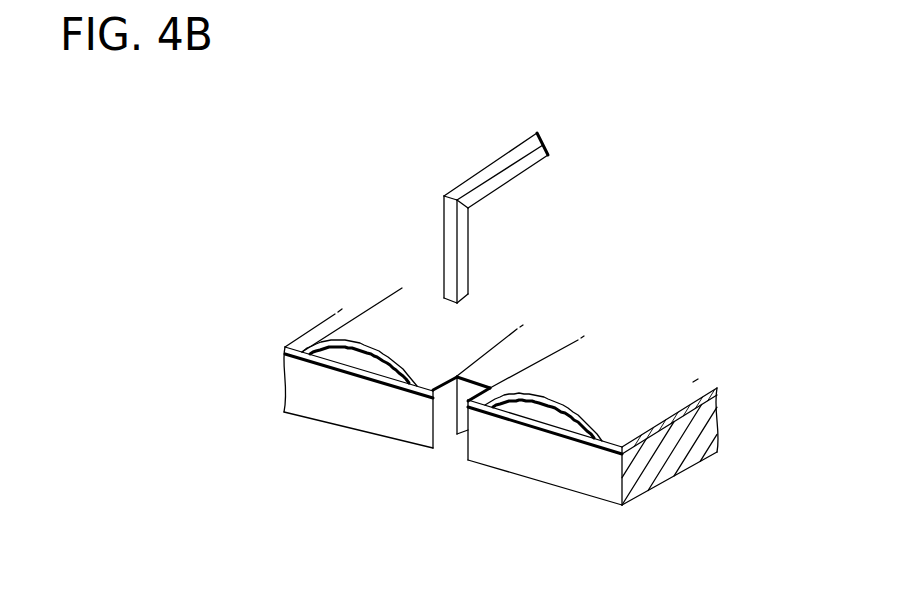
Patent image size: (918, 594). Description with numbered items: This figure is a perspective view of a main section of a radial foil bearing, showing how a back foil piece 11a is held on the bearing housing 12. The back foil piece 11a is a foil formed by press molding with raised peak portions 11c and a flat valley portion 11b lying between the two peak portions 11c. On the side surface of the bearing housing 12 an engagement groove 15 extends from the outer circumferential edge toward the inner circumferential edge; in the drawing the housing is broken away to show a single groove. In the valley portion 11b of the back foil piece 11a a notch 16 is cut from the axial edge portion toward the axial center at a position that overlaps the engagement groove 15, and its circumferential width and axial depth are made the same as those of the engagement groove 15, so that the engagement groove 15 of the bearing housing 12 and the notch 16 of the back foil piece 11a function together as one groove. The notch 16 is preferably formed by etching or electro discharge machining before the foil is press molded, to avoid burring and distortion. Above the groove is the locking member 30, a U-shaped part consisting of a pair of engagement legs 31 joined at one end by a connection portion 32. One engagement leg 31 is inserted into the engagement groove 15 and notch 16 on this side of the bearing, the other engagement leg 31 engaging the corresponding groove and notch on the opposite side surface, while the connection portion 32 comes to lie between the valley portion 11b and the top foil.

The locking member 30 is at (442, 199).
The engagement leg 31 is at (443, 234).
The connection portion 32 is at (500, 158).
The back foil piece 11a is at (400, 387).
The valley portion 11b is at (492, 370).
The peak portion 11c is at (373, 352).
The bearing housing 12 is at (558, 470).
The engagement groove 15 is at (445, 428).
The notch 16 is at (445, 391).